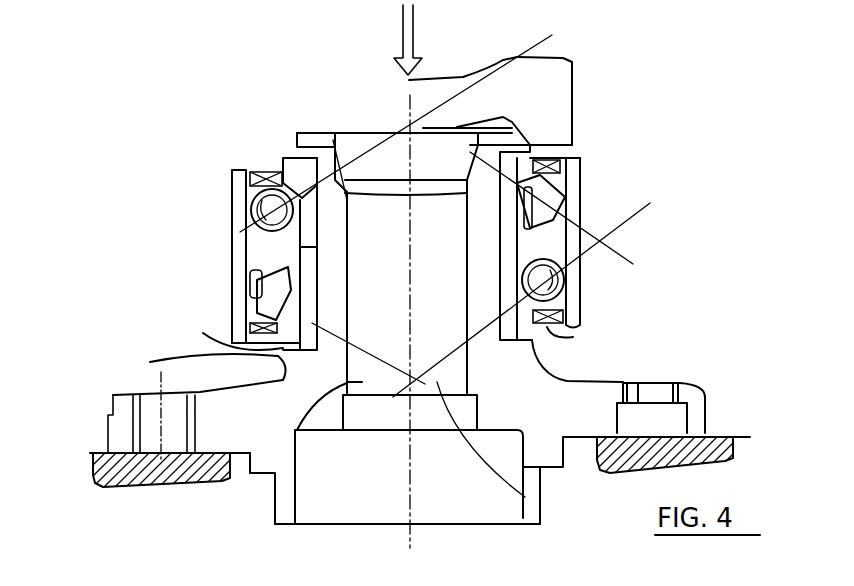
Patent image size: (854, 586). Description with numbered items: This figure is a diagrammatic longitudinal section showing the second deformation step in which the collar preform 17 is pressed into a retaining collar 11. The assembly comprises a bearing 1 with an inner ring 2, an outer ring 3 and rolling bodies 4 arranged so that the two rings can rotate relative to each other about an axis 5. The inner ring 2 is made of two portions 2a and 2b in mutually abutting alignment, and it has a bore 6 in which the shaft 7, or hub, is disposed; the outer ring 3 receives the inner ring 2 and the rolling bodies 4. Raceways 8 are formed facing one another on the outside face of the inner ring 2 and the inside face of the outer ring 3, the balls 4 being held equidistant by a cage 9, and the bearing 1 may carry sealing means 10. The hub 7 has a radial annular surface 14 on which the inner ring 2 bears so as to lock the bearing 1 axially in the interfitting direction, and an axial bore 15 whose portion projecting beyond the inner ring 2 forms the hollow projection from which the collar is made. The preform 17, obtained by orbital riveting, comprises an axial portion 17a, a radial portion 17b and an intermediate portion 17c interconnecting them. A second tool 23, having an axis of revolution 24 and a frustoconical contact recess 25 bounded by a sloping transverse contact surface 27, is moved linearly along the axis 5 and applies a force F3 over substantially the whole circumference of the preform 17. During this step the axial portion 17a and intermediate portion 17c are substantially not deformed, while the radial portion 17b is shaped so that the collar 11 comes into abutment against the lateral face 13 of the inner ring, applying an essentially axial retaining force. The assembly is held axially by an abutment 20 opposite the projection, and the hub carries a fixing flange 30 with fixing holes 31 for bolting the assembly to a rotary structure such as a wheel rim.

The bearing 1 is at (205, 298).
The inner ring 2 is at (236, 351).
The inner ring portion 2a is at (282, 163).
The inner ring portion 2b is at (194, 360).
The outer ring 3 is at (236, 210).
The rolling bodies 4 is at (250, 222).
The axis 5 is at (412, 533).
The bore 6 is at (272, 473).
The shaft 7 is at (262, 380).
The raceways 8 is at (253, 277).
The cage 9 is at (253, 313).
The sealing means 10 is at (577, 333).
The radial collar 11 is at (572, 128).
The lateral face 13 is at (297, 146).
The radial annular surface 14 is at (556, 372).
The axial bore 15 is at (527, 493).
The collar preform 17 is at (297, 140).
The axial portion 17a is at (358, 133).
The radial portion 17b is at (310, 148).
The intermediate portion 17c is at (334, 140).
The abutment 20 is at (710, 437).
The second tool 23 is at (458, 124).
The axis of revolution 24 is at (409, 82).
The contact recess 25 is at (414, 126).
The contact surface 27 is at (572, 84).
The fixing flange 30 is at (228, 420).
The fixing holes 31 is at (640, 420).
The force F3 is at (388, 40).